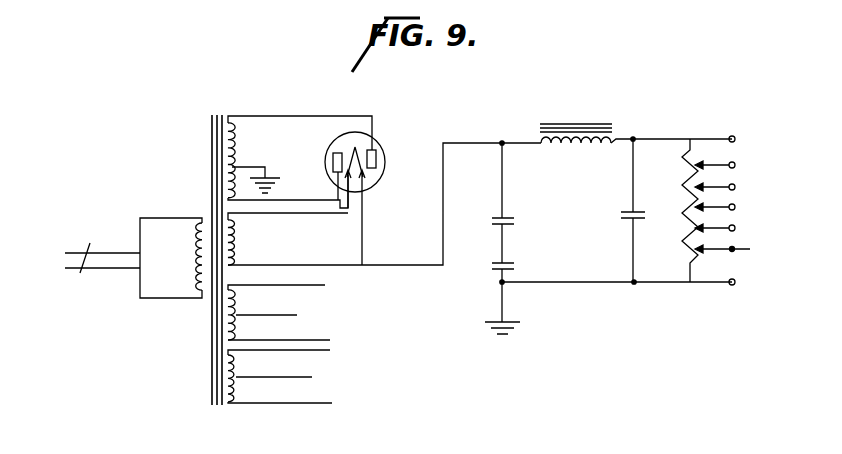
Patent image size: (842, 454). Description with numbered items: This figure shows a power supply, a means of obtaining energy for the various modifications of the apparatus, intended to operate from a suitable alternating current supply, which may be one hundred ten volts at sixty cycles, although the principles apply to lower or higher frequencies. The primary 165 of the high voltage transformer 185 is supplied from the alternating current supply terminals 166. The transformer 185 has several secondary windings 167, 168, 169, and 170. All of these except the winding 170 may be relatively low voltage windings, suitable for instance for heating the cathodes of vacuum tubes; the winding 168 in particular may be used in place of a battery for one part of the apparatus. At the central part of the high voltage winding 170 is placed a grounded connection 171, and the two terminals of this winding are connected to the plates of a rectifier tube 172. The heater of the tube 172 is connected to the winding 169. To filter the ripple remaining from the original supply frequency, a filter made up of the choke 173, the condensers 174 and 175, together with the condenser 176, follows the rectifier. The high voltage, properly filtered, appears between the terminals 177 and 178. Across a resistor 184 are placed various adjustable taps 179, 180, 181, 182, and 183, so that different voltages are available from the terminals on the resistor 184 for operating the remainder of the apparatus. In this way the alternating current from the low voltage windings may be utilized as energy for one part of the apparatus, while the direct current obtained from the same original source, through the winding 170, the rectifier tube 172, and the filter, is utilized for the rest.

The primary 165 is at (197, 253).
The alternating current supply terminals 166 is at (102, 251).
The secondary winding 167 is at (250, 390).
The secondary winding 168 is at (248, 332).
The secondary winding 169 is at (243, 250).
The secondary winding 170 is at (236, 135).
The grounded connection 171 is at (263, 167).
The rectifier tube 172 is at (383, 148).
The choke 173 is at (630, 128).
The condenser 174 is at (510, 222).
The condenser 175 is at (505, 262).
The condenser 176 is at (626, 213).
The terminal 177 is at (735, 136).
The terminal 178 is at (735, 287).
The adjustable tap 179 is at (740, 158).
The adjustable tap 180 is at (736, 186).
The adjustable tap 181 is at (741, 199).
The adjustable tap 182 is at (741, 220).
The adjustable tap 183 is at (740, 252).
The resistor 184 is at (685, 208).
The transformer 185 is at (210, 246).